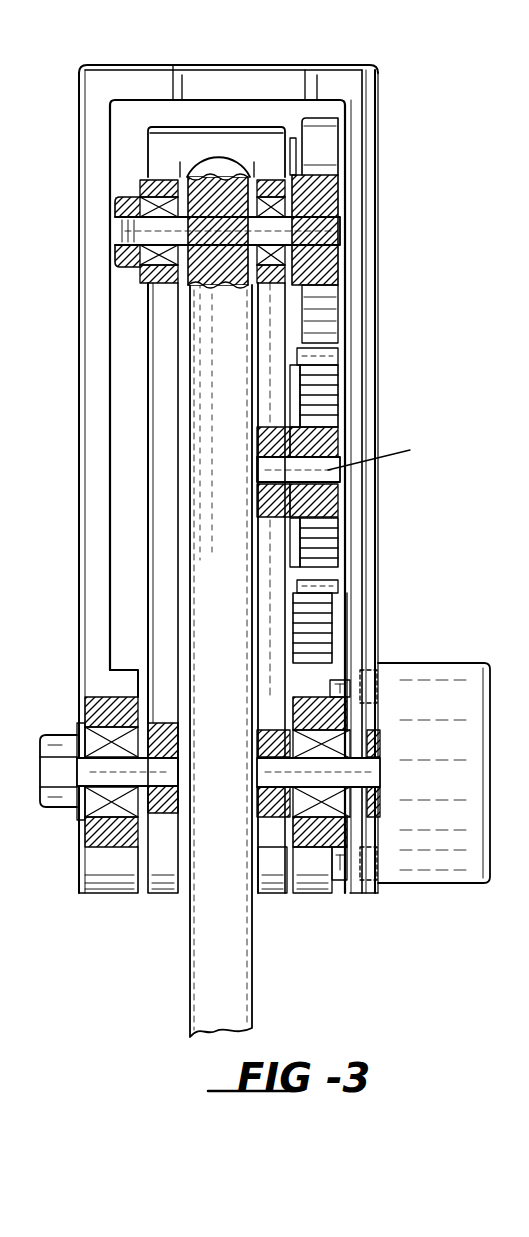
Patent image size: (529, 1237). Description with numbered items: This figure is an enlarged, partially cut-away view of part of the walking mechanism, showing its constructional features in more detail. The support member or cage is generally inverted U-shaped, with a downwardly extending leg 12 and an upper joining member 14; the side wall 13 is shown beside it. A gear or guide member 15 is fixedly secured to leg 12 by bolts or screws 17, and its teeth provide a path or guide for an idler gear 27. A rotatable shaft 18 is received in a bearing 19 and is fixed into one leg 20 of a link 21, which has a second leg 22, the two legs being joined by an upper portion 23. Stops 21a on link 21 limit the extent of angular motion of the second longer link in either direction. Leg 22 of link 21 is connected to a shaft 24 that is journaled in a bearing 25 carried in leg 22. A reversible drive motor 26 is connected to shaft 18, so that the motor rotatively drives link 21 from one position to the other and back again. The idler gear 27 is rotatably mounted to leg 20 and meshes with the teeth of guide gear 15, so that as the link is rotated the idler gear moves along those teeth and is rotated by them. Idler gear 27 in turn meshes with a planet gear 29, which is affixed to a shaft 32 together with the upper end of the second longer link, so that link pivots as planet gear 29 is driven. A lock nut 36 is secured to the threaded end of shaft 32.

The leg 12 is at (365, 432).
The left side frame wall 13 is at (90, 378).
The upper joining member 14 is at (143, 67).
The gear or guide member 15 is at (313, 895).
The bolts or screws 17 is at (342, 683).
The rotatable shaft 18 is at (347, 772).
The bearing 19 is at (353, 803).
The leg 20 is at (267, 400).
The link 21 is at (249, 126).
The stops 21a is at (237, 172).
The second leg 22 is at (155, 462).
The upper portion 23 is at (200, 137).
The shaft 24 is at (103, 768).
The bearing 25 is at (122, 264).
The reversible drive motor 26 is at (463, 857).
The idler gear 27 is at (327, 538).
The planet gear 29 is at (330, 166).
The shaft 32 is at (317, 230).
The lock nut 36 is at (120, 207).